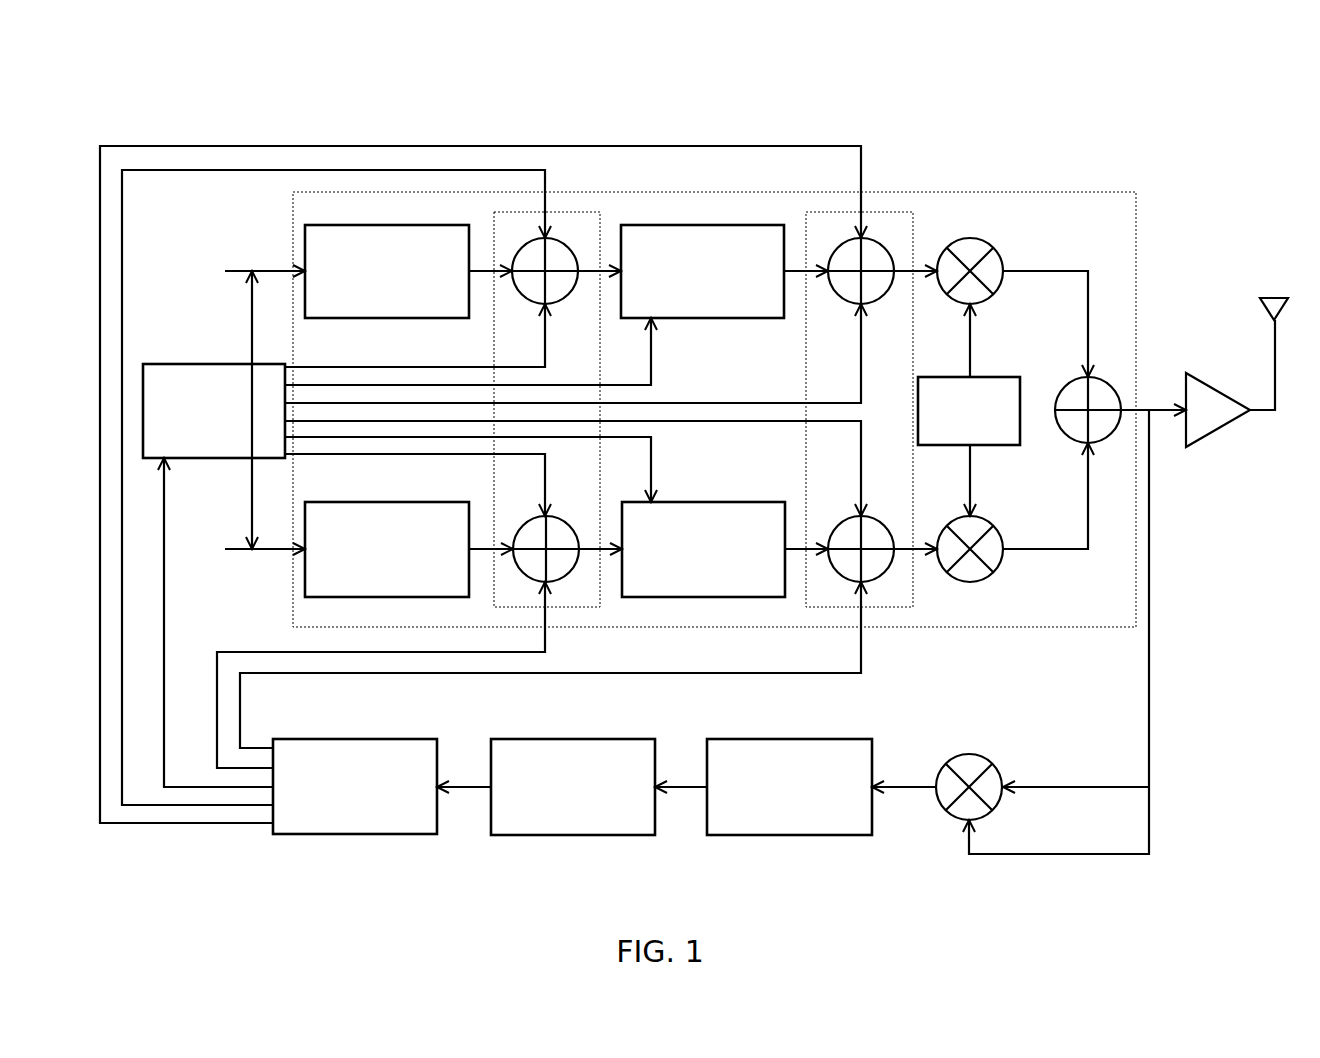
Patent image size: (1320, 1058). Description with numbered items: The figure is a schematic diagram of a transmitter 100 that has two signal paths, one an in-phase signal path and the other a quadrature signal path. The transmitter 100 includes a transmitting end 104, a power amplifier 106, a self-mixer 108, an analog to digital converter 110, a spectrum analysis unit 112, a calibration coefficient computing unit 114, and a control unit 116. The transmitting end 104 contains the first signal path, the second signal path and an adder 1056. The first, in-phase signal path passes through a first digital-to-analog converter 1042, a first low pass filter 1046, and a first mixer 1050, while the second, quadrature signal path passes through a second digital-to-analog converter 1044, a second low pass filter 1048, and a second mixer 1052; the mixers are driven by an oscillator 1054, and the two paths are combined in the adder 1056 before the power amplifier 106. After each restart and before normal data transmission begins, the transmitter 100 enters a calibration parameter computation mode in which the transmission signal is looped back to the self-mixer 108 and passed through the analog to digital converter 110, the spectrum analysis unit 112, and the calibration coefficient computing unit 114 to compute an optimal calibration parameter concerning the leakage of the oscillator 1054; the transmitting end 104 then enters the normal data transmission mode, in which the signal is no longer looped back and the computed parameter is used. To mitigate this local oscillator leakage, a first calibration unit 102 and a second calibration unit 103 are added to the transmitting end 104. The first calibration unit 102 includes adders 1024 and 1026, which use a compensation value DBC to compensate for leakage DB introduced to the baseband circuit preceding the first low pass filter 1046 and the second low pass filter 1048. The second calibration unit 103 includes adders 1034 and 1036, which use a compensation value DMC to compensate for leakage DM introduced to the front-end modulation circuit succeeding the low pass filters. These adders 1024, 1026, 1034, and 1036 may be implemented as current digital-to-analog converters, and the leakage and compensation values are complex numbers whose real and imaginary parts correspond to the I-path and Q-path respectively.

The transmitter 100 is at (1235, 90).
The first calibration unit 102 is at (545, 212).
The second calibration unit 103 is at (861, 212).
The transmitting end 104 is at (1075, 192).
The power amplifier 106 is at (1215, 437).
The self-mixer 108 is at (945, 760).
The analog to digital converter 110 is at (790, 739).
The spectrum analysis unit 112 is at (575, 739).
The calibration coefficient computing unit 114 is at (355, 739).
The control unit 116 is at (205, 364).
The adder 1024 is at (525, 305).
The adder 1026 is at (520, 517).
The adder 1034 is at (840, 305).
The adder 1036 is at (838, 517).
The first digital-to-analog converter 1042 is at (385, 318).
The second digital-to-analog converter 1044 is at (385, 502).
The first low pass filter 1046 is at (705, 318).
The second low pass filter 1048 is at (700, 502).
The first mixer 1050 is at (945, 300).
The second mixer 1052 is at (950, 520).
The oscillator 1054 is at (1020, 377).
The adder 1056 is at (1075, 445).